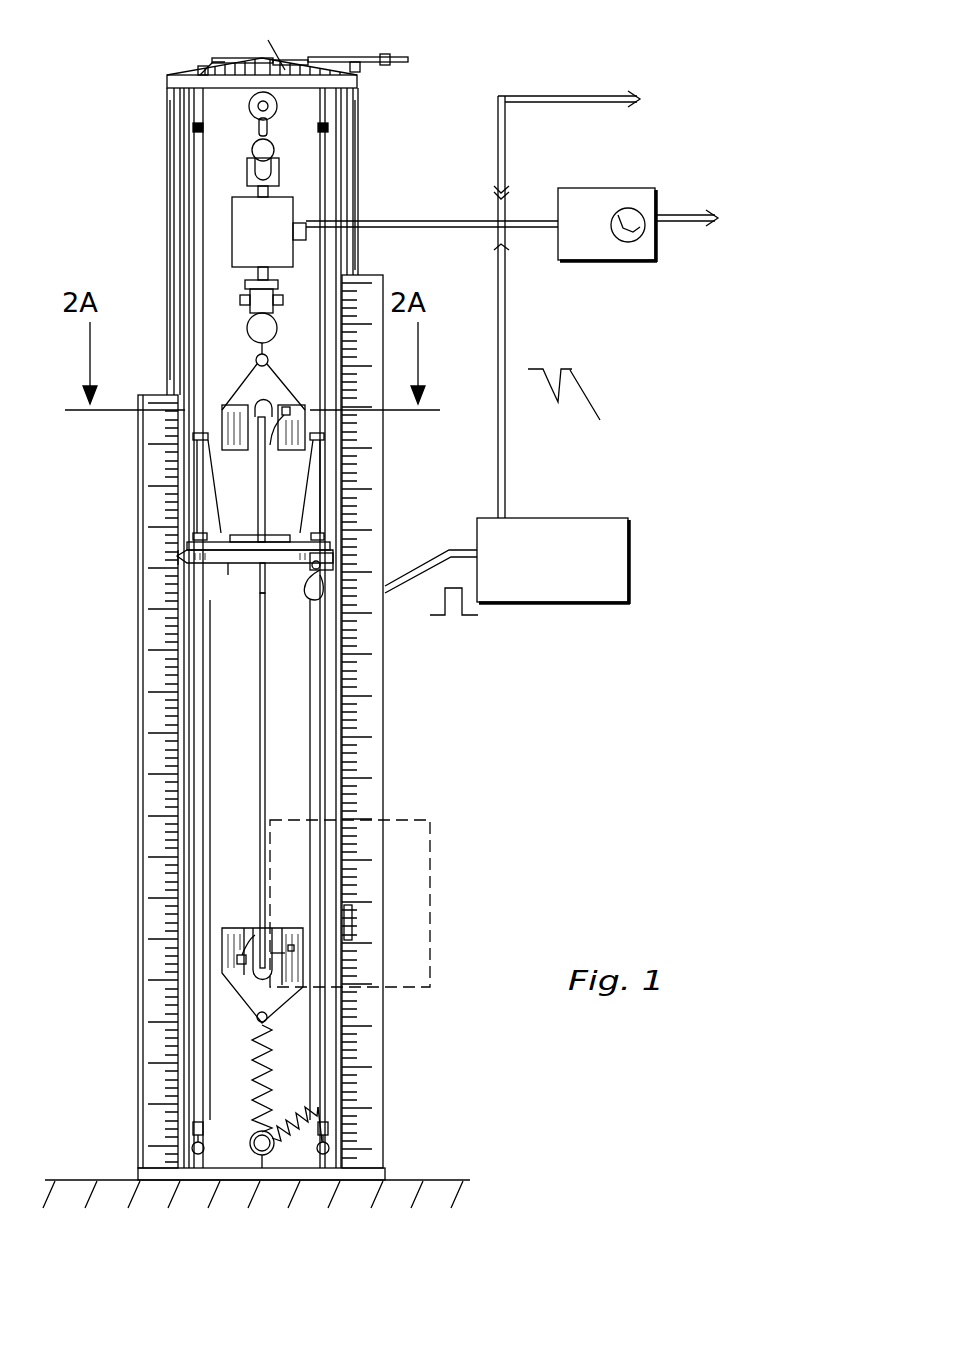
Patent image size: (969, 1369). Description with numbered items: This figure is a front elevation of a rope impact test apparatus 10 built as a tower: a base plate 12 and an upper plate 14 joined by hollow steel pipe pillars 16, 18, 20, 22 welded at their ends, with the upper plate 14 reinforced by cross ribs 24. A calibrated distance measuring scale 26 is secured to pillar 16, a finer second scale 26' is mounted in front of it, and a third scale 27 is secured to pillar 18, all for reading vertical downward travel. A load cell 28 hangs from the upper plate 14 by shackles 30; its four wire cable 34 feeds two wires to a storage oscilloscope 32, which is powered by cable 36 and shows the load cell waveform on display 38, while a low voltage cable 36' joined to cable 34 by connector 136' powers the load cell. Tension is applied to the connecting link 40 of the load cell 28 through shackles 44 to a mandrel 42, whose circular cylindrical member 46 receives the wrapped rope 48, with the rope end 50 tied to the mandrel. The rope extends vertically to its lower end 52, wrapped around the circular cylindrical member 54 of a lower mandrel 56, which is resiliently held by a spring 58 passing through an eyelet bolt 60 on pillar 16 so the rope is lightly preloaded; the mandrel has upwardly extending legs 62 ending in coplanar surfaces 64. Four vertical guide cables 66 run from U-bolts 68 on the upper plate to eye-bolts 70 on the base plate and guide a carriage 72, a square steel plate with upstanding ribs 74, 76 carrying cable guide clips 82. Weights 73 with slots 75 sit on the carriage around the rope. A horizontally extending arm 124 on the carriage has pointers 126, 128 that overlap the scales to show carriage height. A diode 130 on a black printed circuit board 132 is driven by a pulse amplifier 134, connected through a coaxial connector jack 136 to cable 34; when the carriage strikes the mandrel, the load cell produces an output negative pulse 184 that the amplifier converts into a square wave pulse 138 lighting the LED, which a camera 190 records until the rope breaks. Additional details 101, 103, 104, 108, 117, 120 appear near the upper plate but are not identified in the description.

The test apparatus 10 is at (118, 590).
The base plate 12 is at (315, 1180).
The upper plate 14 is at (357, 82).
The pillar 16 is at (352, 160).
The pillar 18 is at (172, 146).
The pillar 20 is at (358, 122).
The pillar 22 is at (167, 118).
The cross ribs 24 is at (287, 72).
The calibrated distance measuring scale 26 is at (390, 721).
The second scale 26' is at (386, 917).
The third scale 27 is at (145, 716).
The load cell 28 is at (232, 242).
The shackles 30 is at (247, 170).
The oscilloscope 32 is at (598, 196).
The four wire cable 34 is at (462, 230).
The cable 36 is at (719, 204).
The cable 36' is at (644, 88).
The display 38 is at (640, 238).
The connecting link 40 is at (245, 290).
The mandrel 42 is at (240, 388).
The shackles 44 is at (270, 332).
The circular cylindrical member 46 is at (273, 420).
The rope 48 is at (258, 680).
The end of the rope 50 is at (305, 426).
The lower end of the rope 52 is at (258, 930).
The circular cylindrical member 54 is at (272, 955).
The lower mandrel 56 is at (282, 1002).
The spring 58 is at (255, 1105).
The eyelet bolt 60 is at (250, 1152).
The upwardly extending legs 62 is at (300, 948).
The surfaces 64 is at (240, 930).
The vertical guide cables 66 is at (212, 720).
The U-bolts 68 is at (200, 72).
The eye-bolts 70 is at (192, 1150).
The carriage 72 is at (265, 538).
The weights 73 is at (247, 538).
The upstanding rib 74 is at (180, 556).
The slots 75 is at (260, 566).
The upstanding rib 76 is at (315, 500).
The cable guide clip 82 is at (195, 536).
The bar 101 is at (220, 58).
The bar 103 is at (254, 60).
The plate 104 is at (280, 41).
The bracket 108 is at (213, 62).
The arm 117 is at (325, 60).
The block 120 is at (390, 58).
The horizontally extending arm 124 is at (232, 572).
The pointer 126 is at (337, 556).
The pointer 128 is at (180, 565).
The diode 130 is at (312, 596).
The printed circuit board 132 is at (312, 560).
The pulse amplifier 134 is at (630, 568).
The coaxial connector jack 136 is at (530, 307).
The connector 136' is at (530, 174).
The square wave pulse 138 is at (470, 615).
The output negative pulse 184 is at (576, 412).
The camera 190 is at (430, 820).